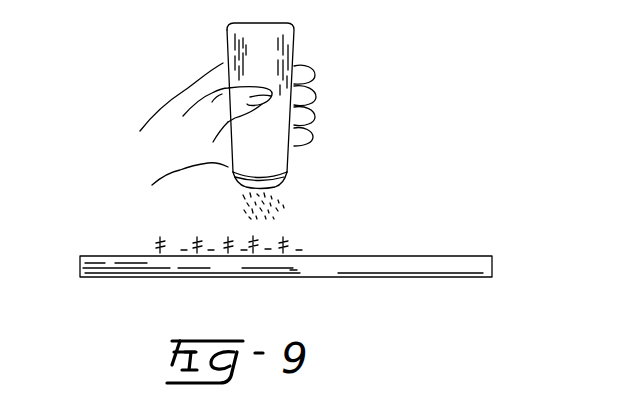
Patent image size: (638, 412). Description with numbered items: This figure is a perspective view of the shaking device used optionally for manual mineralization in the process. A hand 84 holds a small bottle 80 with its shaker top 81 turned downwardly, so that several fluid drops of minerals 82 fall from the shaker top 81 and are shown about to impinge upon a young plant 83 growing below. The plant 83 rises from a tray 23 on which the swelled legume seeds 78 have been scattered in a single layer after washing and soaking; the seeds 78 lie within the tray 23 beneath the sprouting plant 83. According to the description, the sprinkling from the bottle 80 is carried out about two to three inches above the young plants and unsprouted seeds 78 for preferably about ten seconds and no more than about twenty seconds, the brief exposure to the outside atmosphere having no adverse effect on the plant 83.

The bottle 80 is at (296, 36).
The shaker top 81 is at (238, 185).
The fluid drops of minerals 82 is at (293, 212).
The plant 83 is at (157, 245).
The hand 84 is at (163, 113).
The mat 23 is at (494, 264).
The seeds 78 is at (312, 252).